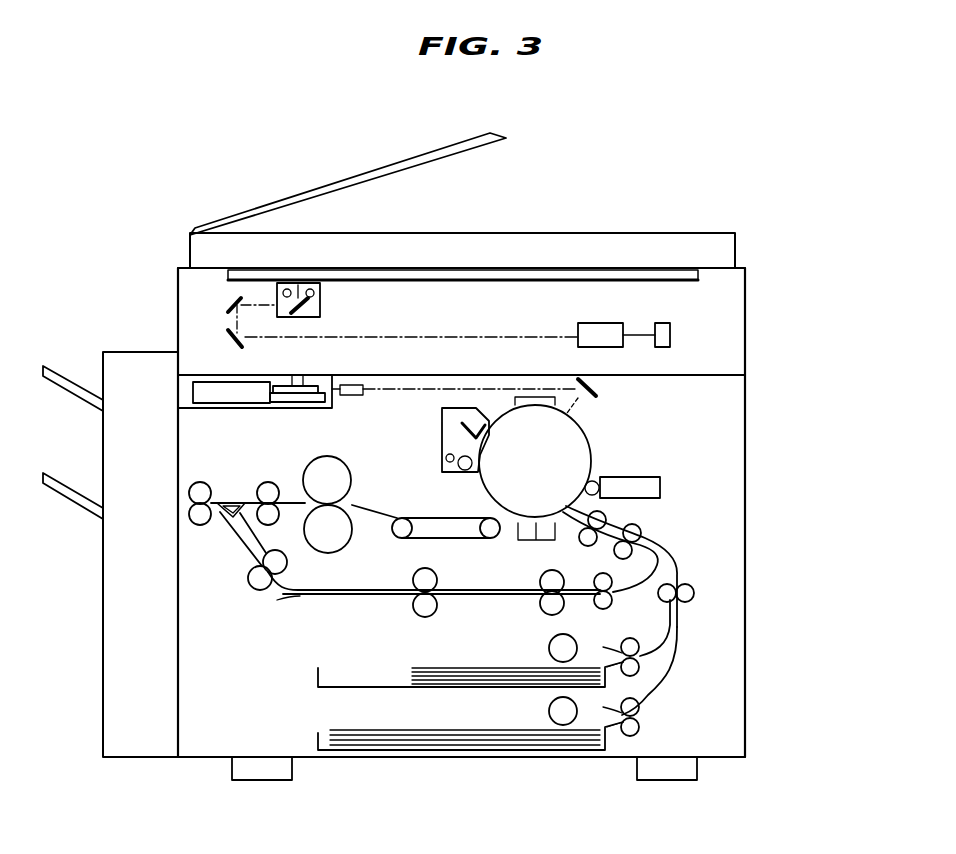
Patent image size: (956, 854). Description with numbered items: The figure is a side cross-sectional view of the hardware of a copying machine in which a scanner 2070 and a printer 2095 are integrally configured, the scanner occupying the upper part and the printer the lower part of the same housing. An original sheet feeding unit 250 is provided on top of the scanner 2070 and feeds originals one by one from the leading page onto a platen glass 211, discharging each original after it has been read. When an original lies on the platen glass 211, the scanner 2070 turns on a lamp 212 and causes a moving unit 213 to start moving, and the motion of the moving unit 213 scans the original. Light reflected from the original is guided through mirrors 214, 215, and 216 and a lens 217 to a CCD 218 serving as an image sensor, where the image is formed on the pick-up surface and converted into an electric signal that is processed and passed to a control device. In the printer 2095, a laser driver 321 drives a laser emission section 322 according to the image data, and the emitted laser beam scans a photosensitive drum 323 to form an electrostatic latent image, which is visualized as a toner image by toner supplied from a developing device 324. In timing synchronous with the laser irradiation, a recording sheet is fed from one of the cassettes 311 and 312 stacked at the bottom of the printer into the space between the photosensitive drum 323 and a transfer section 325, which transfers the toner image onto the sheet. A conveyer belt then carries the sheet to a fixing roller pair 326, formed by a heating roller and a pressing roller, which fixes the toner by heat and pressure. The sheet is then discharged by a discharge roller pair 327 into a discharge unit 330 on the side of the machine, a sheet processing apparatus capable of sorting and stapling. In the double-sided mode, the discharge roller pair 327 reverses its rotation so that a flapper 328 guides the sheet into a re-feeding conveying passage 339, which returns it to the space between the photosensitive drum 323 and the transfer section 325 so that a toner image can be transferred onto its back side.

The original sheet feeding unit 250 is at (295, 201).
The platen glass 211 is at (641, 272).
The lamp 212 is at (312, 283).
The moving unit 213 is at (320, 298).
The mirror 214 is at (303, 318).
The mirror 215 is at (227, 307).
The mirror 216 is at (228, 328).
The lens 217 is at (606, 323).
The CCD 218 is at (670, 335).
The scanner 2070 is at (747, 292).
The printer 2095 is at (747, 500).
The laser driver 321 is at (192, 392).
The laser emission section 322 is at (288, 375).
The photosensitive drum 323 is at (580, 426).
The developing device 324 is at (660, 493).
The transfer section 325 is at (536, 541).
The fixing roller pair 326 is at (377, 476).
The discharge roller pair 327 is at (205, 482).
The flapper 328 is at (222, 519).
The re-feeding conveying passage 339 is at (497, 598).
The cassette 311 is at (317, 677).
The cassette 312 is at (317, 740).
The discharge unit 330 is at (148, 748).